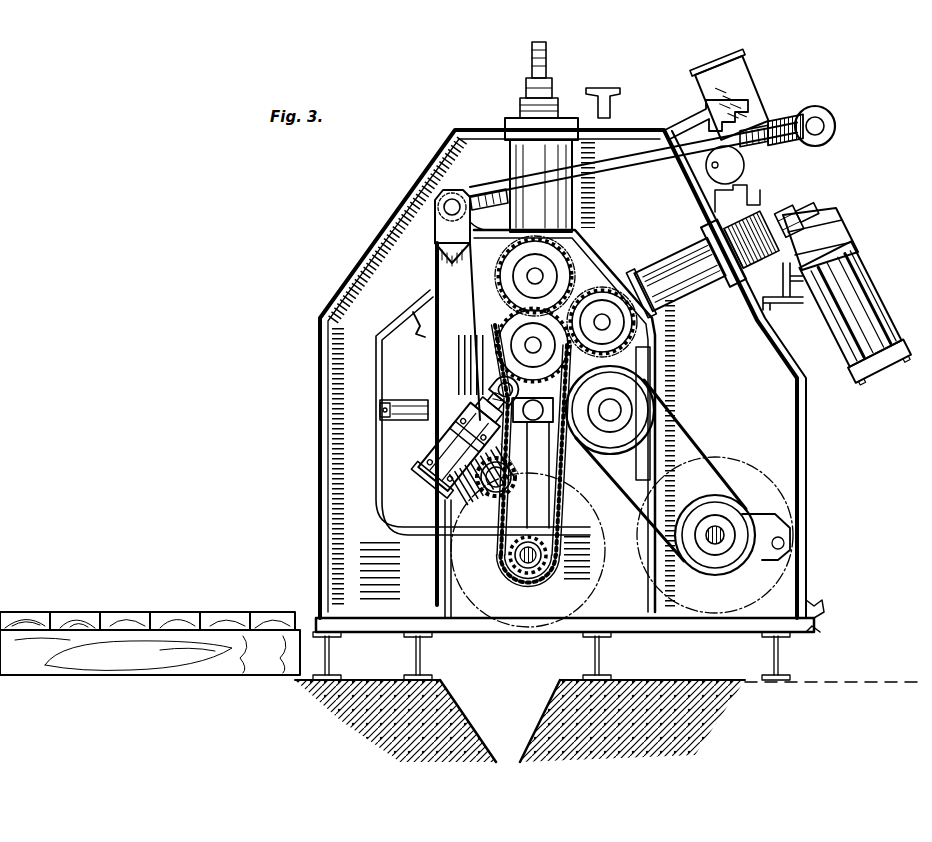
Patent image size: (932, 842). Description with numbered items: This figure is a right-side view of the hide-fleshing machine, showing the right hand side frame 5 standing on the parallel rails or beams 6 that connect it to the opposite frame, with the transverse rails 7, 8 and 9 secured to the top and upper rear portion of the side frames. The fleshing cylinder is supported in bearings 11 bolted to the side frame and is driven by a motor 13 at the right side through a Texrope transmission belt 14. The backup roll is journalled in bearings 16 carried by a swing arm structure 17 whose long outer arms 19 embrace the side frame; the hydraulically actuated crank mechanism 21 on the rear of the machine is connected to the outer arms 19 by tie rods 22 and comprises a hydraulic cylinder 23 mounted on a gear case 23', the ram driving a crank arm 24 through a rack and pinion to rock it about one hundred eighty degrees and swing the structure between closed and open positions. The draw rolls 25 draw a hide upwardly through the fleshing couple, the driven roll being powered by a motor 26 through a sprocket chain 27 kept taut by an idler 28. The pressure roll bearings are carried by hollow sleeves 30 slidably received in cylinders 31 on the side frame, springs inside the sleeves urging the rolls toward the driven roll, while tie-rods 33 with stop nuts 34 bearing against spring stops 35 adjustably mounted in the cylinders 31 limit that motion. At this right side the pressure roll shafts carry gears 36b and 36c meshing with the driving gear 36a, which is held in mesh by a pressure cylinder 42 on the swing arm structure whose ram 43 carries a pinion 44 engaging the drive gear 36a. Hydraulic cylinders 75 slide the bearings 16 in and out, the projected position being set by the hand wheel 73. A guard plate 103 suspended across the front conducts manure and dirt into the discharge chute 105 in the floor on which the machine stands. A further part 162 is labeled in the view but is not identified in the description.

The right hand side frame 5 is at (807, 425).
The parallel rails or beams 6 is at (414, 660).
The transverse rail 7 is at (610, 95).
The transverse rail 8 is at (674, 118).
The transverse rail 9 is at (786, 304).
The bearings 11 is at (650, 361).
The motor 13 is at (733, 463).
The Texrope transmission belt 14 is at (676, 421).
The bearings 16 is at (562, 484).
The swing arm structure 17 is at (425, 246).
The outer arms 19 is at (445, 292).
The hydraulically actuated crank mechanism 21 is at (795, 108).
The tie rods 22 is at (625, 165).
The hydraulic cylinder 23 is at (848, 297).
The gear case 23' is at (740, 95).
The crank arm 24 is at (804, 150).
The draw rolls 25 is at (496, 306).
The motor 26 is at (452, 581).
The sprocket chain 27 is at (565, 496).
The idler 28 is at (496, 477).
The hollow sleeves 30 is at (518, 242).
The cylinders 31 is at (702, 299).
The tie-rods 33 is at (808, 210).
The stop nuts 34 is at (790, 210).
The spring stops 35 is at (522, 96).
The driving gear 36a is at (497, 334).
The gear 36b is at (601, 290).
The gear 36c is at (562, 262).
The pressure cylinder 42 is at (447, 443).
The ram 43 is at (479, 409).
The pinion 44 is at (488, 381).
The hand wheel 73 is at (422, 334).
The hydraulic cylinders 75 is at (423, 406).
The guard plate 103 is at (446, 506).
The discharge chute 105 is at (462, 710).
The bearing 162 is at (535, 463).